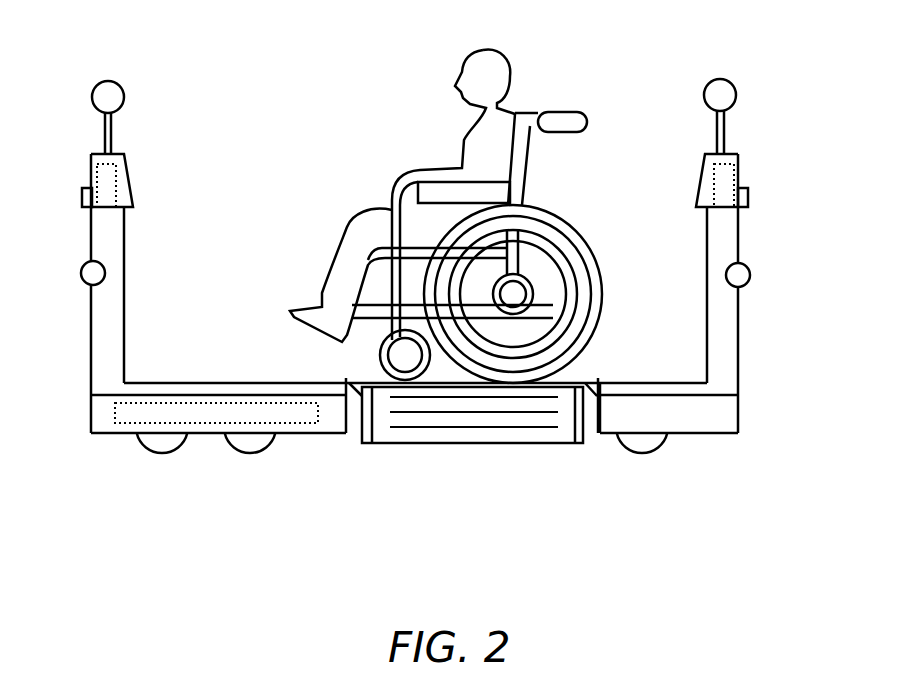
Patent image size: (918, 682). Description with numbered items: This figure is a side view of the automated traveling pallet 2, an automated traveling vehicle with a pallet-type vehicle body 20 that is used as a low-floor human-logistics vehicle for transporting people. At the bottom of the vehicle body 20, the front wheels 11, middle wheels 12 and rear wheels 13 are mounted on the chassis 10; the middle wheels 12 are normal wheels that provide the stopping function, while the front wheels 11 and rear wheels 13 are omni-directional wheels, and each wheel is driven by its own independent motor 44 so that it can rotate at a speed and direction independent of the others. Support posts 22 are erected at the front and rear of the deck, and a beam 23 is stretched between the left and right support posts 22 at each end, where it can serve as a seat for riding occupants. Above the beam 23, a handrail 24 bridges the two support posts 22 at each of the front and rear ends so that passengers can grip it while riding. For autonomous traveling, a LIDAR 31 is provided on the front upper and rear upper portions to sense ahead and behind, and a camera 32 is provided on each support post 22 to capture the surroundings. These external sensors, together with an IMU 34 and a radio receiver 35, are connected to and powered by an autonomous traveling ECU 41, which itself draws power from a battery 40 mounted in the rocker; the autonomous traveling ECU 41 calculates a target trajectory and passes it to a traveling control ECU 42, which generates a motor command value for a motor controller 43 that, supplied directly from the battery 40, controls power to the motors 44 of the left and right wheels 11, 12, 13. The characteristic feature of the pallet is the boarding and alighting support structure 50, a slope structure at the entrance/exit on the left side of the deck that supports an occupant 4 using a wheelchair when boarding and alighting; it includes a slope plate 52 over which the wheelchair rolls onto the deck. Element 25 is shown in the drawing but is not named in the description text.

The automated traveling pallet 2 is at (704, 46).
The occupant 4 is at (488, 50).
The chassis 10 is at (748, 413).
The front wheels 11 is at (187, 442).
The middle wheels 12 is at (272, 443).
The rear wheels 13 is at (668, 443).
The vehicle body 20 is at (748, 352).
The support posts 22 is at (102, 324).
The beam 23 is at (115, 182).
The handrails 24 is at (91, 96).
The handle head 25 is at (133, 181).
The LIDAR 31 is at (82, 190).
The camera 32 is at (82, 266).
The IMU 34 is at (216, 487).
The radio receiver 35 is at (222, 487).
The battery 40 is at (127, 427).
The autonomous traveling ECU 41 is at (195, 487).
The traveling control ECU 42 is at (216, 487).
The motor controller 43 is at (216, 487).
The motor 44 is at (216, 487).
The boarding and alighting support structure 50 is at (493, 482).
The slope plate 52 is at (553, 428).